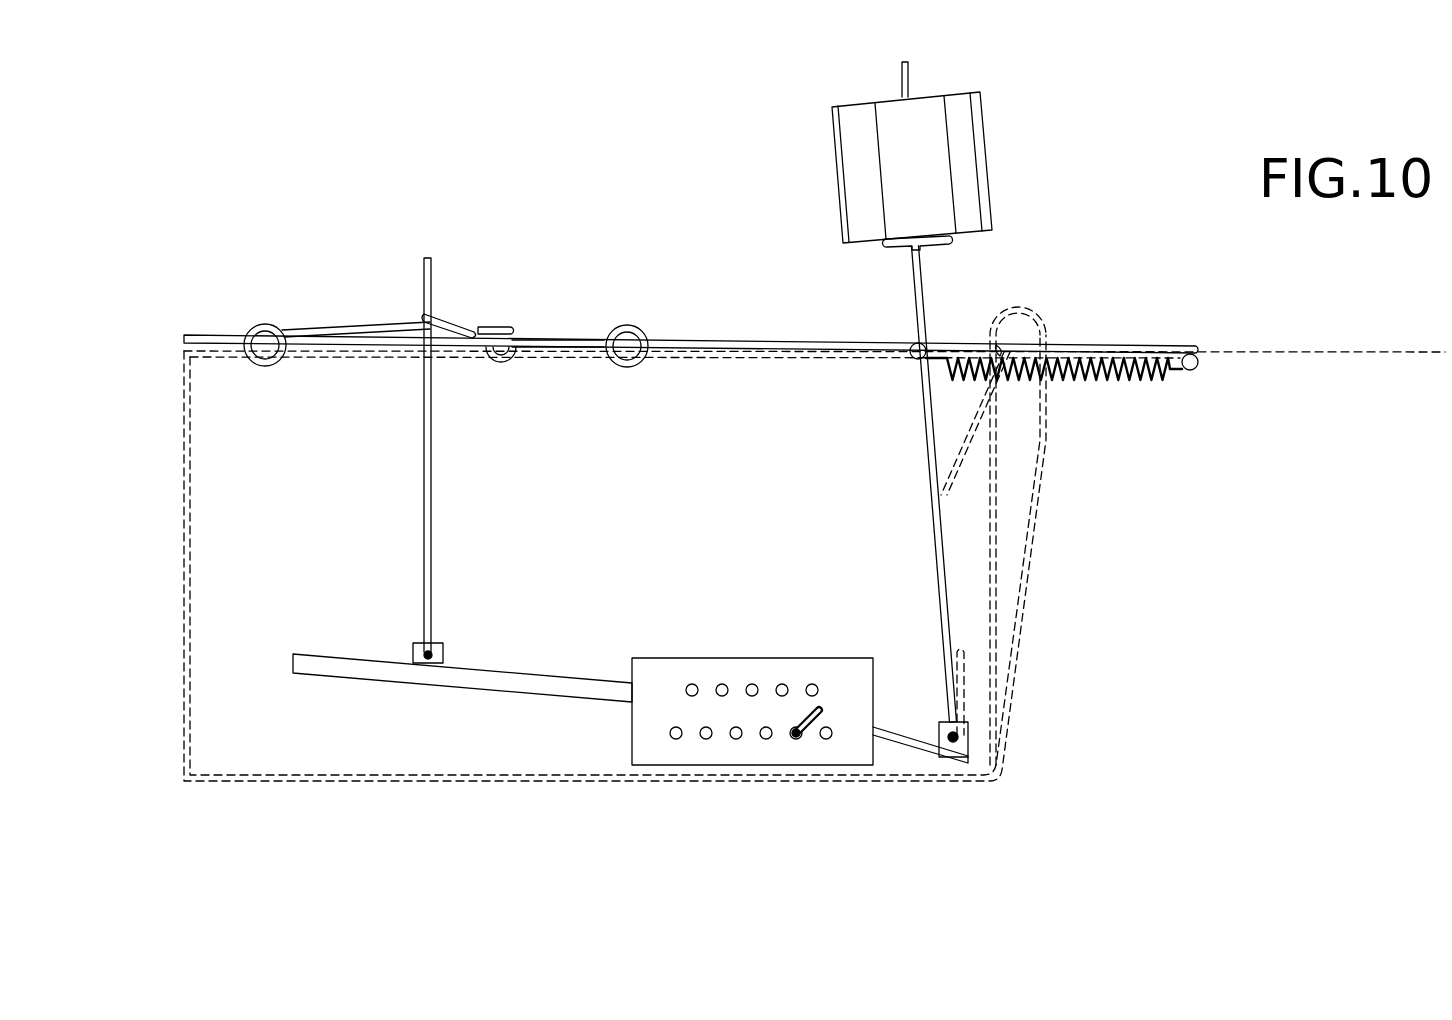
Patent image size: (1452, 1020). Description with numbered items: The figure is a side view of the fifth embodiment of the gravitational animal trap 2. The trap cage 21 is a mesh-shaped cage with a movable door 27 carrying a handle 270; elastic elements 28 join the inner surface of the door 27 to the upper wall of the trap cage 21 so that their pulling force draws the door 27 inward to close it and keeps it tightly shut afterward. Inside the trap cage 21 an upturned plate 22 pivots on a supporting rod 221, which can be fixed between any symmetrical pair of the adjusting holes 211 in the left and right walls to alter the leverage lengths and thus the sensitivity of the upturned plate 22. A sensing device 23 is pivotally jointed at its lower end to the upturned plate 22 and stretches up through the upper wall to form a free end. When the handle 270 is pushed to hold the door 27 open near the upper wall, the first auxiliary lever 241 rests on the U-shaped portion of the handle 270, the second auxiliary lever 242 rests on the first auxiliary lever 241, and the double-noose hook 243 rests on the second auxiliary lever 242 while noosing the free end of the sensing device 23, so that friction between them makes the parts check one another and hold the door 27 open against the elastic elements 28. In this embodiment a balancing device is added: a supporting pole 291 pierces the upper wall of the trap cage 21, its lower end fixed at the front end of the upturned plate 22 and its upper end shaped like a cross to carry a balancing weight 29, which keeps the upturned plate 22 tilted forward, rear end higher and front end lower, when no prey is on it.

The gravitational animal trap 2 is at (744, 262).
The trap cage 21 is at (640, 537).
The adjusting holes 211 is at (694, 684).
The upturned plate 22 is at (446, 680).
The supporting rod 221 is at (826, 709).
The sensing device 23 is at (424, 488).
The first auxiliary lever 241 is at (560, 337).
The second auxiliary lever 242 is at (316, 332).
The double-noose hook 243 is at (451, 322).
The movable door 27 is at (1378, 352).
The handle 270 is at (818, 343).
The elastic elements 28 is at (1140, 385).
The balancing weight 29 is at (975, 150).
The supporting pole 291 is at (927, 290).